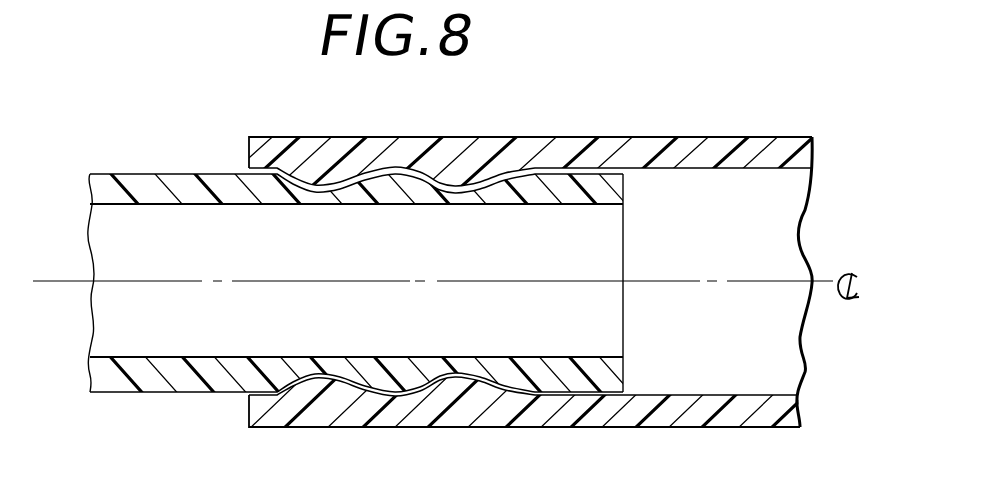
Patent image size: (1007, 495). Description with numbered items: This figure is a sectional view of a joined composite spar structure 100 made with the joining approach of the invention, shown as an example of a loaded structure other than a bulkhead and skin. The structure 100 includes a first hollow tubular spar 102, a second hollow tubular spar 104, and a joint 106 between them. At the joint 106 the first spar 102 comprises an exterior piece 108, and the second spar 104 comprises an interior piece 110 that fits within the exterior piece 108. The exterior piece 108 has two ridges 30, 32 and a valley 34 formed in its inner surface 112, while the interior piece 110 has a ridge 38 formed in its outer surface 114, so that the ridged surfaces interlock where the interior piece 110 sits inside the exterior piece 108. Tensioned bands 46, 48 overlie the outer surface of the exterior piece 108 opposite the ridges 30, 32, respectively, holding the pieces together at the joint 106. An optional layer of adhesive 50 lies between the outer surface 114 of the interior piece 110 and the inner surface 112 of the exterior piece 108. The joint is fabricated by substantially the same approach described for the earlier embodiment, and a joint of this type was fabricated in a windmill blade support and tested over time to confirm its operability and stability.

The joined composite spar structure 100 is at (182, 74).
The first hollow tubular spar 102 is at (733, 142).
The second hollow tubular spar 104 is at (103, 178).
The joint 106 is at (533, 212).
The exterior piece 108 is at (263, 150).
The interior piece 110 is at (387, 367).
The inner surface 112 is at (466, 385).
The outer surface 114 is at (415, 387).
The ridge 30 is at (330, 390).
The ridge 32 is at (487, 387).
The valley 34 is at (410, 400).
The ridge 38 is at (457, 377).
The tensioned band 46 is at (340, 138).
The tensioned band 48 is at (483, 141).
The layer of adhesive 50 is at (283, 165).